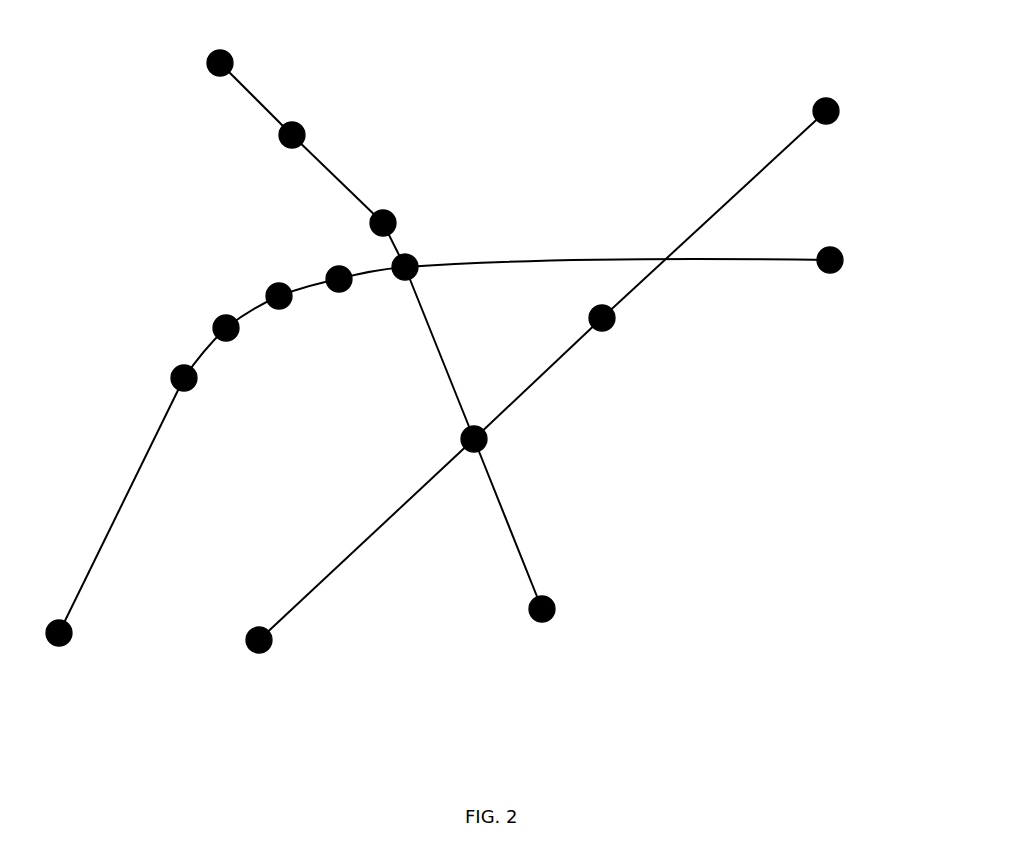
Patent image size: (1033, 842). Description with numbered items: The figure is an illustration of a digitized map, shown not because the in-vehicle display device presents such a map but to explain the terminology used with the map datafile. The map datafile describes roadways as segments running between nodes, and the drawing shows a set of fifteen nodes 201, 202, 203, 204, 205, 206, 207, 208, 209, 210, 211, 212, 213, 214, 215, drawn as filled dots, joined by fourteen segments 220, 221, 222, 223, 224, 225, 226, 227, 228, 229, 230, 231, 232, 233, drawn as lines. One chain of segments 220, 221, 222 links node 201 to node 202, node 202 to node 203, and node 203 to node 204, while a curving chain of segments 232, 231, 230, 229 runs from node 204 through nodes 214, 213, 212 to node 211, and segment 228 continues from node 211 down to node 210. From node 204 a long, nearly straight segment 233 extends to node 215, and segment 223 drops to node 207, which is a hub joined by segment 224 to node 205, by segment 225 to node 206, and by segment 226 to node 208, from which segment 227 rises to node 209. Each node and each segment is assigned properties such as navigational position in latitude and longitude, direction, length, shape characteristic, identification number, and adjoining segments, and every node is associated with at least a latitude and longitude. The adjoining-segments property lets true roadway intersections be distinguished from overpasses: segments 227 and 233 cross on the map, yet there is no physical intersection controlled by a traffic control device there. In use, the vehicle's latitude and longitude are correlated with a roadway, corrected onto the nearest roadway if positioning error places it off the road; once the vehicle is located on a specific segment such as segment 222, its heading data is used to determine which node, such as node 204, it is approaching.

The node 201 is at (232, 53).
The node 202 is at (305, 127).
The node 203 is at (395, 215).
The node 204 is at (412, 260).
The node 205 is at (553, 602).
The node 206 is at (250, 630).
The node 207 is at (462, 433).
The node 208 is at (588, 315).
The node 209 is at (834, 103).
The node 210 is at (71, 627).
The node 211 is at (173, 365).
The node 212 is at (215, 323).
The node 213 is at (270, 288).
The node 214 is at (330, 268).
The node 215 is at (840, 248).
The segment 220 is at (253, 97).
The segment 221 is at (340, 178).
The segment 222 is at (400, 247).
The segment 223 is at (438, 363).
The segment 224 is at (513, 534).
The segment 225 is at (333, 542).
The segment 226 is at (525, 388).
The segment 227 is at (740, 188).
The segment 228 is at (127, 499).
The segment 229 is at (199, 360).
The segment 230 is at (240, 318).
The segment 231 is at (297, 290).
The segment 232 is at (372, 273).
The segment 233 is at (538, 260).